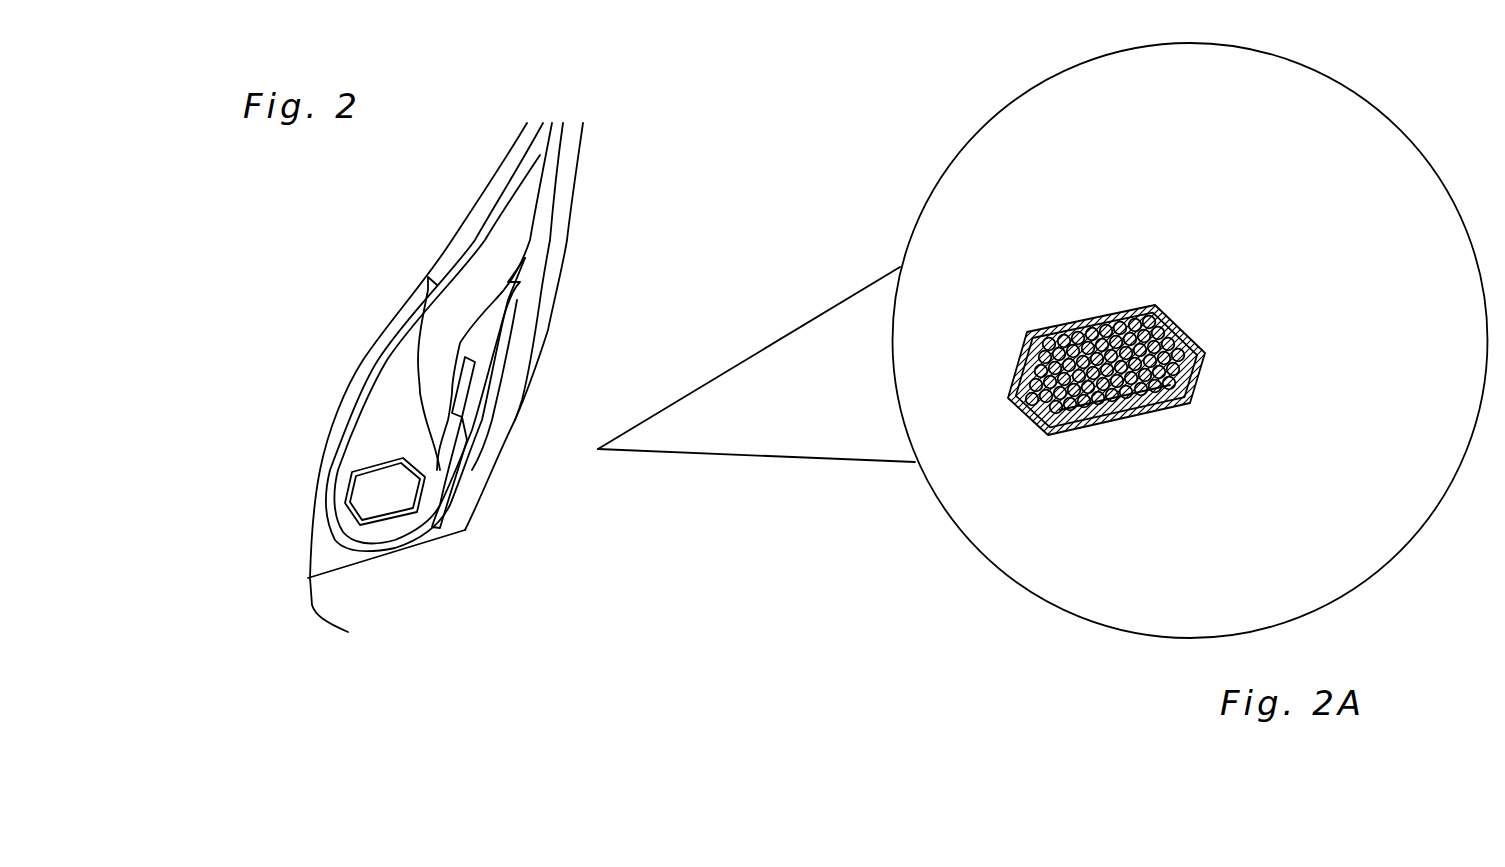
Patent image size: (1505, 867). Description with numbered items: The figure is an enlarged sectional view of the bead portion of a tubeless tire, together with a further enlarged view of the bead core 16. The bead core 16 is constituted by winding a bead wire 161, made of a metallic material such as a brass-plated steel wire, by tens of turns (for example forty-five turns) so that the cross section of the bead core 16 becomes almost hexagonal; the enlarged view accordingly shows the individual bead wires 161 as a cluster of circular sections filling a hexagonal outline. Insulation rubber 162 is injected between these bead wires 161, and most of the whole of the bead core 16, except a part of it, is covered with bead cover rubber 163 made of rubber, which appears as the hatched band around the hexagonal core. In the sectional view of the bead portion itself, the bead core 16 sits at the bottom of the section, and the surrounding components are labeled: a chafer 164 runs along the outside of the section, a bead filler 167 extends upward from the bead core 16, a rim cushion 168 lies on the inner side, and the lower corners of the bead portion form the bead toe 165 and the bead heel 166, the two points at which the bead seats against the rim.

In FIG. 2, the bead core 16 is at (388, 498).
In FIG. 2A, the bead core 16 is at (1000, 358).
In FIG. 2A, the bead wire 161 is at (1165, 316).
In FIG. 2A, the insulation rubber 162 is at (1118, 383).
In FIG. 2A, the bead cover rubber 163 is at (1072, 330).
In FIG. 2, the chafer 164 is at (588, 273).
In FIG. 2, the bead toe 165 is at (417, 410).
In FIG. 2, the bead heel 166 is at (470, 530).
In FIG. 2, the bead filler 167 is at (450, 345).
In FIG. 2, the rim cushion 168 is at (507, 390).